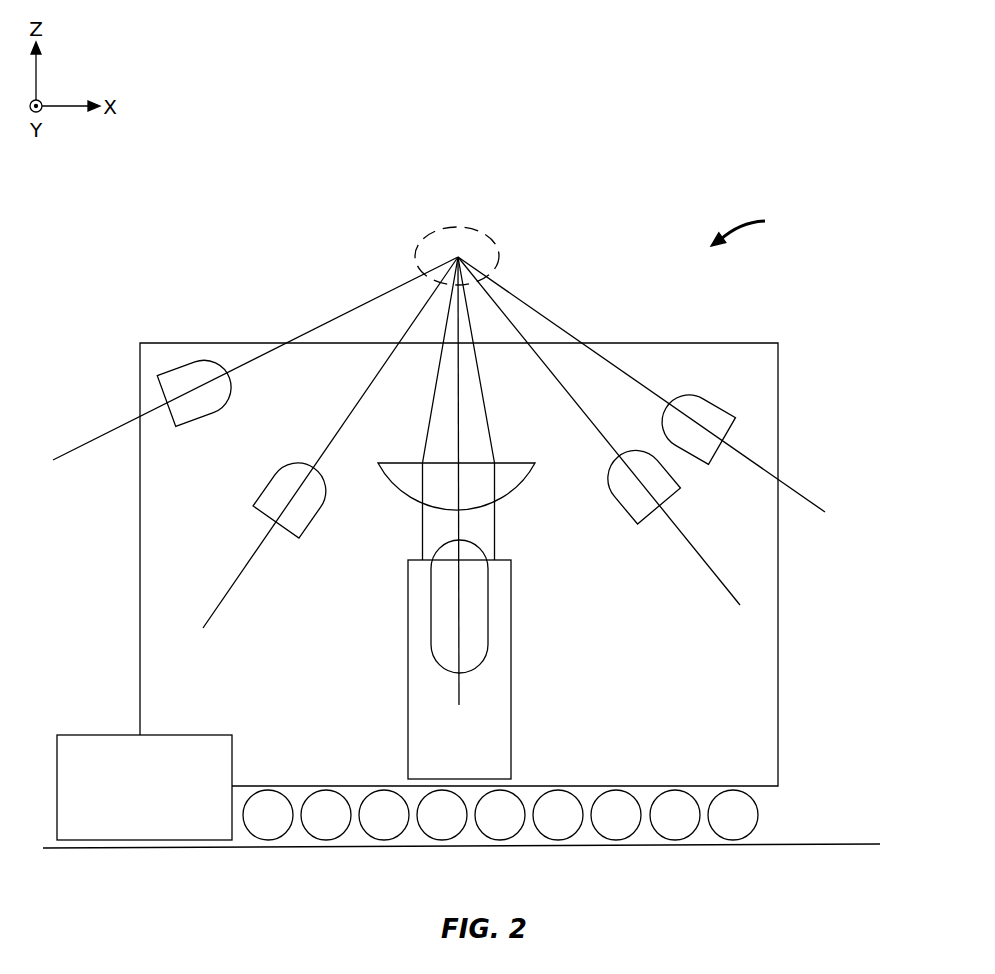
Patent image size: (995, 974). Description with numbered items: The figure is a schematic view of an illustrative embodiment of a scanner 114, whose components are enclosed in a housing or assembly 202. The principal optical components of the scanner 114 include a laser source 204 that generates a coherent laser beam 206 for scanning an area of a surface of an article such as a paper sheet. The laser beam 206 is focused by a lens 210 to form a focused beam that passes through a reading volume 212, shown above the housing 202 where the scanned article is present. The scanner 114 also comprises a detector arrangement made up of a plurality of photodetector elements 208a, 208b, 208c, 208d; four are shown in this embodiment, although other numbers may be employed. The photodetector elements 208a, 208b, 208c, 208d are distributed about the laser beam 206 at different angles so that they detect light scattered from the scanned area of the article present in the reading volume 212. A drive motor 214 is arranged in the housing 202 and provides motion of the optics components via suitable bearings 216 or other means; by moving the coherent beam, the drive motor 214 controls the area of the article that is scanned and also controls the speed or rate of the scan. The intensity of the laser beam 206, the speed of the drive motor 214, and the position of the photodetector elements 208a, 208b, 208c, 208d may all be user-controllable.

The scanner 114 is at (770, 215).
The housing 202 is at (780, 623).
The laser source 204 is at (511, 697).
The laser beam 206 is at (491, 422).
The photodetector element 208a is at (193, 423).
The photodetector element 208b is at (308, 527).
The photodetector element 208c is at (623, 507).
The photodetector element 208d is at (705, 463).
The lens 210 is at (515, 484).
The reading volume 212 is at (432, 228).
The drive motor 214 is at (132, 833).
The bearings 216 is at (270, 847).